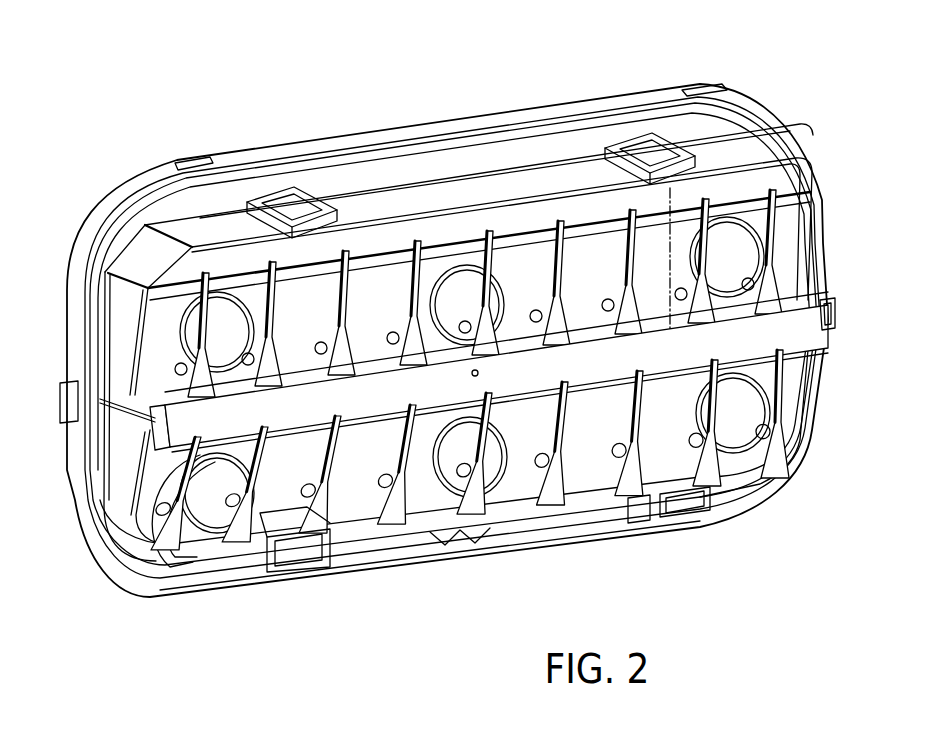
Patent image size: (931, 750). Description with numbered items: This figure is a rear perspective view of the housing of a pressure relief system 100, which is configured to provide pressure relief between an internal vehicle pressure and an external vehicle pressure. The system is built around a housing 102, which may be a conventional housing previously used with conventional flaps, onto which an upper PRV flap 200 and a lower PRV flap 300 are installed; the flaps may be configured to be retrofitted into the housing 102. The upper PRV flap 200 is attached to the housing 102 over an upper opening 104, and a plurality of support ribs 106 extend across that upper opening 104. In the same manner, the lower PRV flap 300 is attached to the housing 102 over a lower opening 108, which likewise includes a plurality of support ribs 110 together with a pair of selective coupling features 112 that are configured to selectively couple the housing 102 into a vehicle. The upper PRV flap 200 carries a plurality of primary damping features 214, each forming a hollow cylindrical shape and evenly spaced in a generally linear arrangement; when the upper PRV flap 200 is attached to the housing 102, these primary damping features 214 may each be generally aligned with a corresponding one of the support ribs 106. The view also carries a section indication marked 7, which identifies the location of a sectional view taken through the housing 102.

The pressure relief system 100 is at (712, 38).
The housing 102 is at (760, 152).
The upper opening 104 is at (786, 236).
The support ribs 106 is at (420, 360).
The lower opening 108 is at (793, 378).
The support ribs 110 is at (404, 522).
The selective coupling features 112 is at (300, 535).
The upper PRV flap 200 is at (360, 340).
The primary damping features 214 is at (316, 346).
The lower PRV flap 300 is at (347, 505).
The section line 7- 7 is at (672, 193).